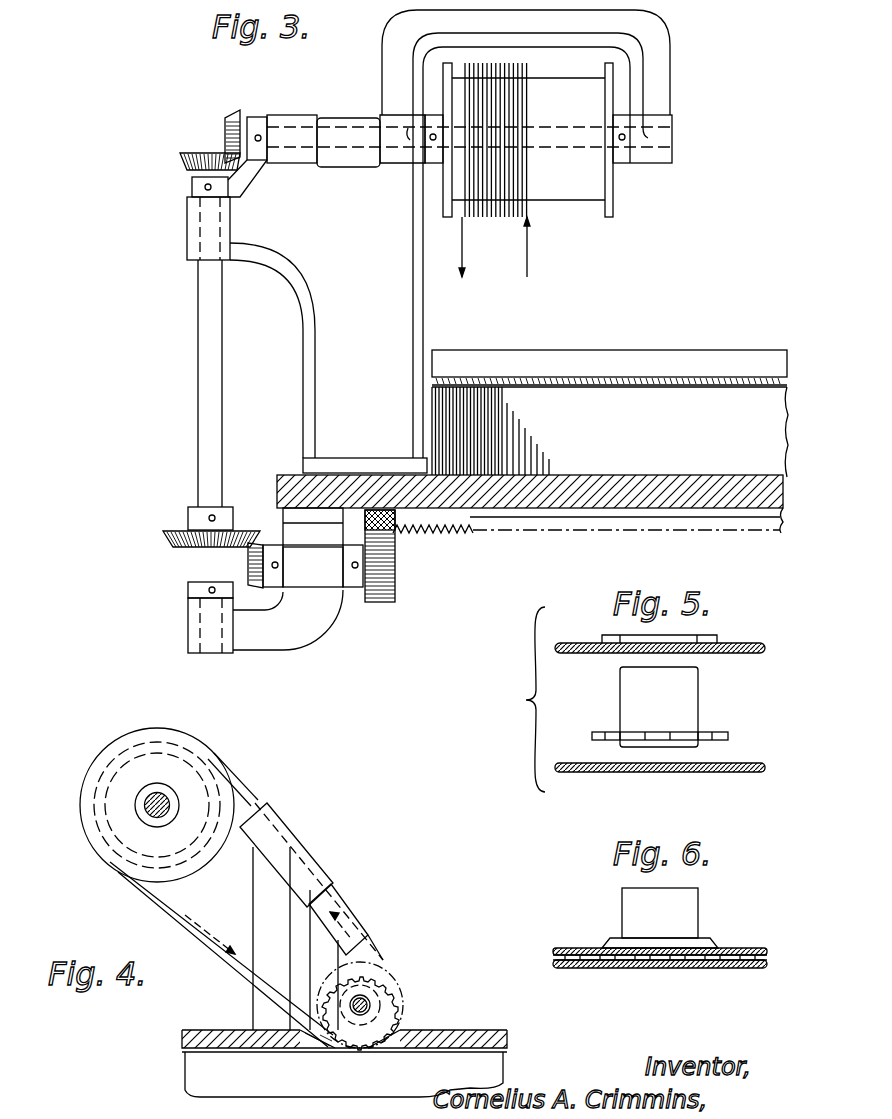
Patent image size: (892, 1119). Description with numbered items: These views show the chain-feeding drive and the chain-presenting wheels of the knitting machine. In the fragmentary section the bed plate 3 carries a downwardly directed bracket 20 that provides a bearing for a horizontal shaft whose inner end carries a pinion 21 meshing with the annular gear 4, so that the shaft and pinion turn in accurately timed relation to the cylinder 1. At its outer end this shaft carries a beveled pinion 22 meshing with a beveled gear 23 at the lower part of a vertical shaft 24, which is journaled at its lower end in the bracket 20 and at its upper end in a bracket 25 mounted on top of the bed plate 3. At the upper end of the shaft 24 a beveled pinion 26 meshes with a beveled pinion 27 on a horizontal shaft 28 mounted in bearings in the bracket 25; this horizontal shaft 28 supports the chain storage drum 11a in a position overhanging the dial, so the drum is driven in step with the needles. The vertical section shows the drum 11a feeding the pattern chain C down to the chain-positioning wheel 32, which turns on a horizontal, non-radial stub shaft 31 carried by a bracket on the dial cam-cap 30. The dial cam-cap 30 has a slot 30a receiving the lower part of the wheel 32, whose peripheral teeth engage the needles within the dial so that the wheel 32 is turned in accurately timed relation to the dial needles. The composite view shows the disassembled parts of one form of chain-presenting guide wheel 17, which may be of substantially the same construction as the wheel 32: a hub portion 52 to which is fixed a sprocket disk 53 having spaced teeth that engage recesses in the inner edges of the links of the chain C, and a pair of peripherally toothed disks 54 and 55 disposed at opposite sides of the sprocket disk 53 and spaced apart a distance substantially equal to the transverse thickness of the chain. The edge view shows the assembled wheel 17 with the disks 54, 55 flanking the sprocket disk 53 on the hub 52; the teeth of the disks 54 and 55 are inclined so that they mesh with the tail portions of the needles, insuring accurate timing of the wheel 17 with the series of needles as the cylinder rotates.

In FIG. 3, the cylinder 1 is at (663, 405).
In FIG. 4, the cylinder 1 is at (490, 1060).
In FIG. 3, the bed plate 3 is at (514, 497).
In FIG. 3, the annular gear 4 is at (433, 518).
In FIG. 3, the chain storage drum 11a is at (580, 214).
In FIG. 4, the chain storage drum 11a is at (112, 718).
In FIG. 6, the guide wheel 17 is at (747, 923).
In FIG. 3, the bracket 20 is at (282, 635).
In FIG. 3, the pinion 21 is at (380, 593).
In FIG. 3, the beveled pinion 22 is at (273, 524).
In FIG. 3, the beveled gear 23 is at (173, 547).
In FIG. 3, the shaft 24 is at (208, 453).
In FIG. 3, the bracket 25 is at (312, 350).
In FIG. 3, the beveled pinion 26 is at (187, 160).
In FIG. 3, the beveled pinion 27 is at (230, 113).
In FIG. 3, the horizontal shaft 28 is at (343, 130).
In FIG. 4, the horizontal shaft 28 is at (153, 790).
In FIG. 3, the dial cam-cap 30 is at (572, 360).
In FIG. 4, the dial cam-cap 30 is at (477, 1033).
In FIG. 4, the slot 30a is at (400, 1033).
In FIG. 4, the stub shaft 31 is at (370, 1003).
In FIG. 4, the chain-positioning wheel 32 is at (403, 1000).
In FIG. 4, the pattern chain C is at (163, 902).
In FIG. 5, the hub portion 52 is at (690, 693).
In FIG. 6, the hub portion 52 is at (683, 903).
In FIG. 5, the sprocket disk 53 is at (728, 733).
In FIG. 5, the peripherally toothed disk 54 is at (737, 645).
In FIG. 6, the peripherally toothed disk 54 is at (753, 948).
In FIG. 5, the peripherally toothed disk 55 is at (730, 770).
In FIG. 6, the peripherally toothed disk 55 is at (750, 968).